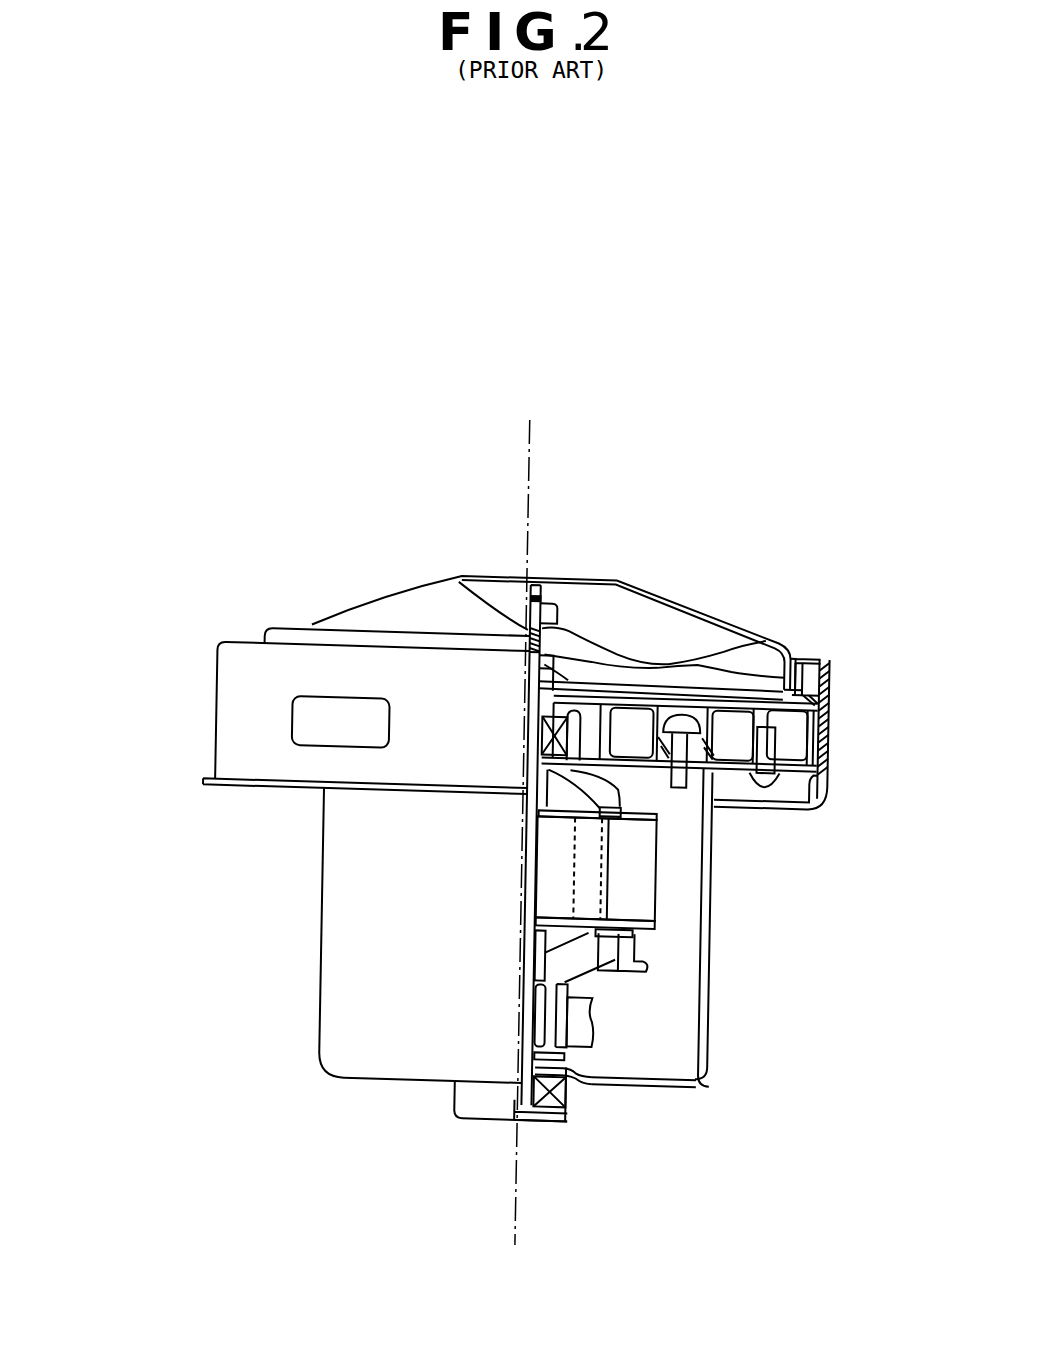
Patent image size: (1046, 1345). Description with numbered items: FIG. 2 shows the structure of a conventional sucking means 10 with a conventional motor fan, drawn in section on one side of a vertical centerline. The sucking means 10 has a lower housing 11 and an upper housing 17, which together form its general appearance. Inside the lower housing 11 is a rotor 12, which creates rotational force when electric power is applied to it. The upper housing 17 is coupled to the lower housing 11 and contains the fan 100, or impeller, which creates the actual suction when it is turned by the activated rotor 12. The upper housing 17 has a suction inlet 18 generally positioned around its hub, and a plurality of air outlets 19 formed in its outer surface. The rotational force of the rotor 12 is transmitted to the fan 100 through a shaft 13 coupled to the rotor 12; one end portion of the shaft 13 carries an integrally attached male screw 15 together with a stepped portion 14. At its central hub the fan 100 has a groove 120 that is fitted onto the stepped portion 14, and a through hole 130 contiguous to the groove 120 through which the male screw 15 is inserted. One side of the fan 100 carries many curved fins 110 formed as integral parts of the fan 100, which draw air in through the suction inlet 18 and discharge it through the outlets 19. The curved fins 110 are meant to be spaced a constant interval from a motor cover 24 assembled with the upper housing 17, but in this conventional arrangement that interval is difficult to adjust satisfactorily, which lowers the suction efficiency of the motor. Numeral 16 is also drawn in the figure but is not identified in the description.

The sucking means 10 is at (306, 918).
The lower housing 11 is at (376, 1057).
The rotor 12 is at (591, 882).
The shaft 13 is at (526, 927).
The stepped portion 14 is at (440, 585).
The male screw 15 is at (522, 665).
The hub 16 is at (554, 601).
The upper housing 17 is at (232, 694).
The suction inlet 18 is at (540, 596).
The air outlets 19 is at (310, 744).
The motor cover 24 is at (308, 631).
The fan 100 is at (626, 612).
The curved fins 110 is at (795, 638).
The groove 120 is at (766, 650).
The through hole 130 is at (691, 620).